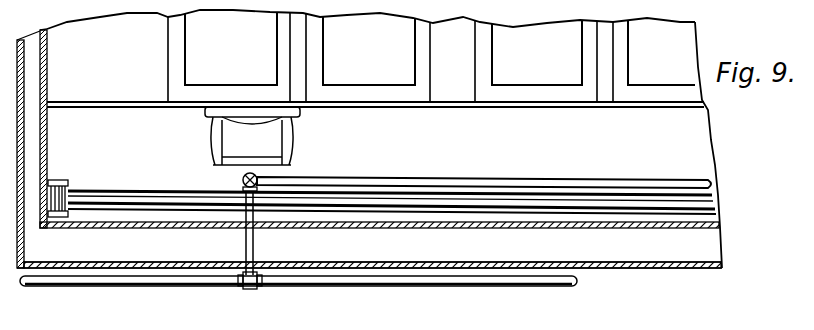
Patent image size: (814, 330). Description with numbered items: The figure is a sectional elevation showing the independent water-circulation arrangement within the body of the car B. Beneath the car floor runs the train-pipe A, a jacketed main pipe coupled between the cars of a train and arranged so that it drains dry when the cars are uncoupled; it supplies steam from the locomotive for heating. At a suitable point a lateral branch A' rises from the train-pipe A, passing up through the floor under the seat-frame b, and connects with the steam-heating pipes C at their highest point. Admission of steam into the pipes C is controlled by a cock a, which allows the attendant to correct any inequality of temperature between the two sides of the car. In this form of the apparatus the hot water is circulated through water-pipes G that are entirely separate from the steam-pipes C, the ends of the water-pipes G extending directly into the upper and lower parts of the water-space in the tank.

The body of the car B is at (431, 57).
The seat-frame b is at (252, 136).
The water-pipes G is at (107, 189).
The steam-heating pipes C is at (392, 180).
The cock a is at (241, 180).
The lateral branch A' is at (239, 240).
The train-pipe A is at (298, 296).